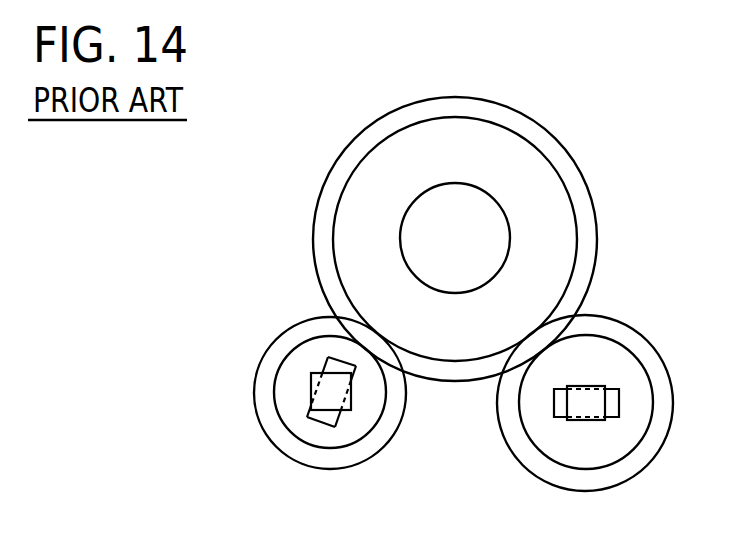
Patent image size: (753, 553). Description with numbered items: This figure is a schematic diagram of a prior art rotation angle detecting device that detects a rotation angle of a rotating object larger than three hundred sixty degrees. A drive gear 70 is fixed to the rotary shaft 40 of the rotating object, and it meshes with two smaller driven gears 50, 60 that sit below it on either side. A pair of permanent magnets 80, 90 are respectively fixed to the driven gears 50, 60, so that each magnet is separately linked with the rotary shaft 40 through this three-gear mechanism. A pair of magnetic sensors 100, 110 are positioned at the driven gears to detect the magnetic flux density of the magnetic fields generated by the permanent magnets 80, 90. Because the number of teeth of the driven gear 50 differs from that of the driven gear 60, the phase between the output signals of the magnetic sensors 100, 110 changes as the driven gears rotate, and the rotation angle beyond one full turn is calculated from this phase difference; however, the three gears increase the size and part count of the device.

The rotary shaft 40 is at (482, 217).
The drive gear 70 is at (363, 218).
The driven gear 50 is at (300, 368).
The driven gear 60 is at (615, 357).
The permanent magnet 80 is at (320, 413).
The magnetic sensor 100 is at (350, 407).
The magnetic sensor 110 is at (578, 410).
The permanent magnet 90 is at (613, 412).